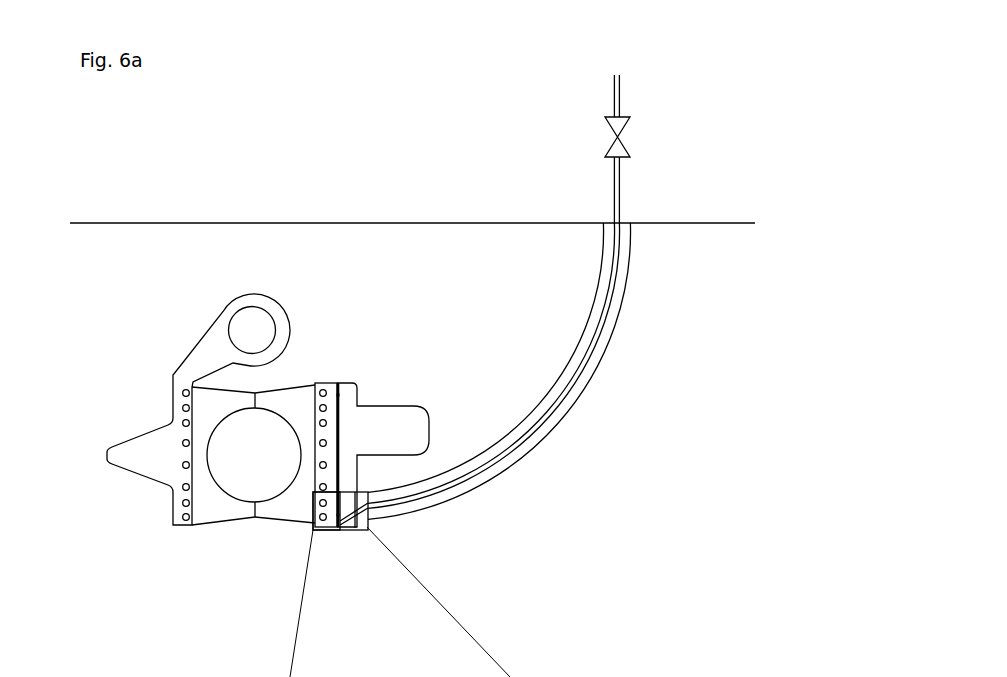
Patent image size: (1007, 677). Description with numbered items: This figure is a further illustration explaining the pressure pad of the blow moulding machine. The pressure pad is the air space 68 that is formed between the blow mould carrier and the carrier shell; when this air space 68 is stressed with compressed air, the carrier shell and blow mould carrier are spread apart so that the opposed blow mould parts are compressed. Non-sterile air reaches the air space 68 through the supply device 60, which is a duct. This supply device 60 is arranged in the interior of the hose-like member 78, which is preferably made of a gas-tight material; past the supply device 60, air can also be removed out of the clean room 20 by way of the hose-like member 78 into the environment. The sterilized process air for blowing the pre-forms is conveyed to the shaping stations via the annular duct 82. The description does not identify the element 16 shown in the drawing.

The clamp bar 16 is at (322, 512).
The clean room 20 is at (504, 302).
The supply device 60 is at (362, 517).
The air space 68 is at (427, 602).
The hose-like member 78 is at (600, 370).
The annular duct 82 is at (622, 142).